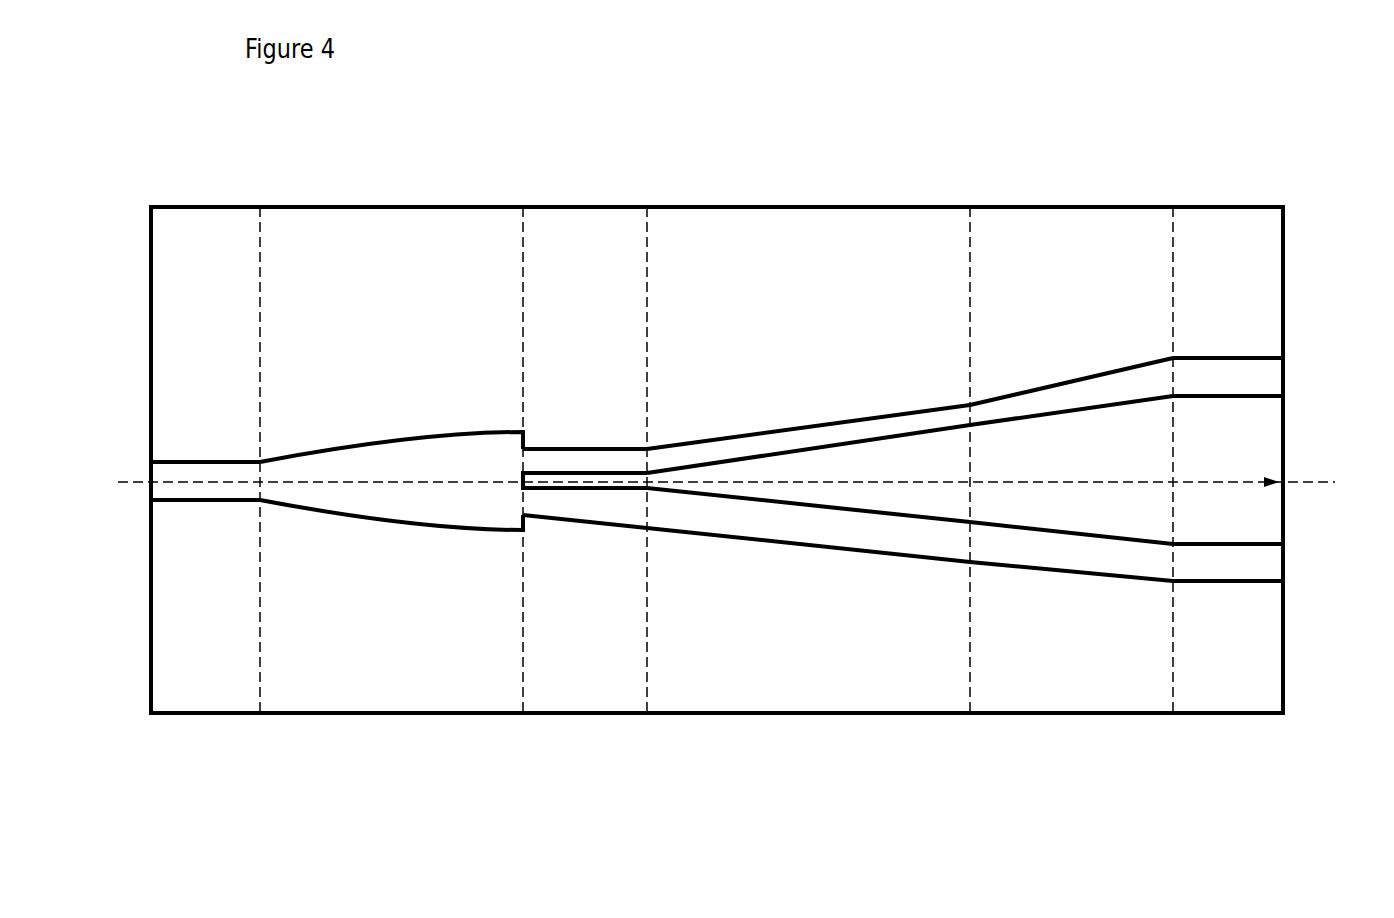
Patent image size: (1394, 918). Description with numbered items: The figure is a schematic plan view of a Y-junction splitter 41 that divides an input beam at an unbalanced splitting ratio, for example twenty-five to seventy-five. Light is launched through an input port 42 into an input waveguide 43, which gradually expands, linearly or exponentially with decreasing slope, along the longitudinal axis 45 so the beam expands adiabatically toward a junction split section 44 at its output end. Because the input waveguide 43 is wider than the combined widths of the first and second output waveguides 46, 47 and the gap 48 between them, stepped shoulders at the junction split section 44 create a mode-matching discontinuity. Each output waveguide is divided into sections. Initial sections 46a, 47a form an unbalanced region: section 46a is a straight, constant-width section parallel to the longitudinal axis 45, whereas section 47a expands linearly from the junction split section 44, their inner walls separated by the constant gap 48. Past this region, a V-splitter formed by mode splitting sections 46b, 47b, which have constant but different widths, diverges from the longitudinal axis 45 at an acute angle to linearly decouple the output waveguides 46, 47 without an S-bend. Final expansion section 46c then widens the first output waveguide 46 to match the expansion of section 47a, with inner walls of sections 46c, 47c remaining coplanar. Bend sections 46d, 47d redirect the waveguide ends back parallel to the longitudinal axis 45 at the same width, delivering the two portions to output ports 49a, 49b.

The Y-junction splitter 41 is at (199, 233).
The input port 42 is at (226, 486).
The input waveguide 43 is at (400, 461).
The junction split section 44 is at (509, 491).
The longitudinal axis 45 is at (1305, 481).
The first output waveguide 46 is at (915, 296).
The initial section of first output waveguide 46a is at (600, 457).
The mode splitting section of first output waveguide 46b is at (850, 430).
The final expansion section of first output waveguide 46c is at (1090, 392).
The bend section of first output waveguide 46d is at (1229, 373).
The second output waveguide 47 is at (909, 666).
The initial expansion section of second output waveguide 47a is at (605, 505).
The mode splitting section of second output waveguide 47b is at (836, 520).
The final expansion section of second output waveguide 47c is at (1087, 560).
The bend section of second output waveguide 47d is at (1238, 565).
The gap 48 is at (577, 483).
The first output port 49a is at (1285, 375).
The second output port 49b is at (1285, 562).